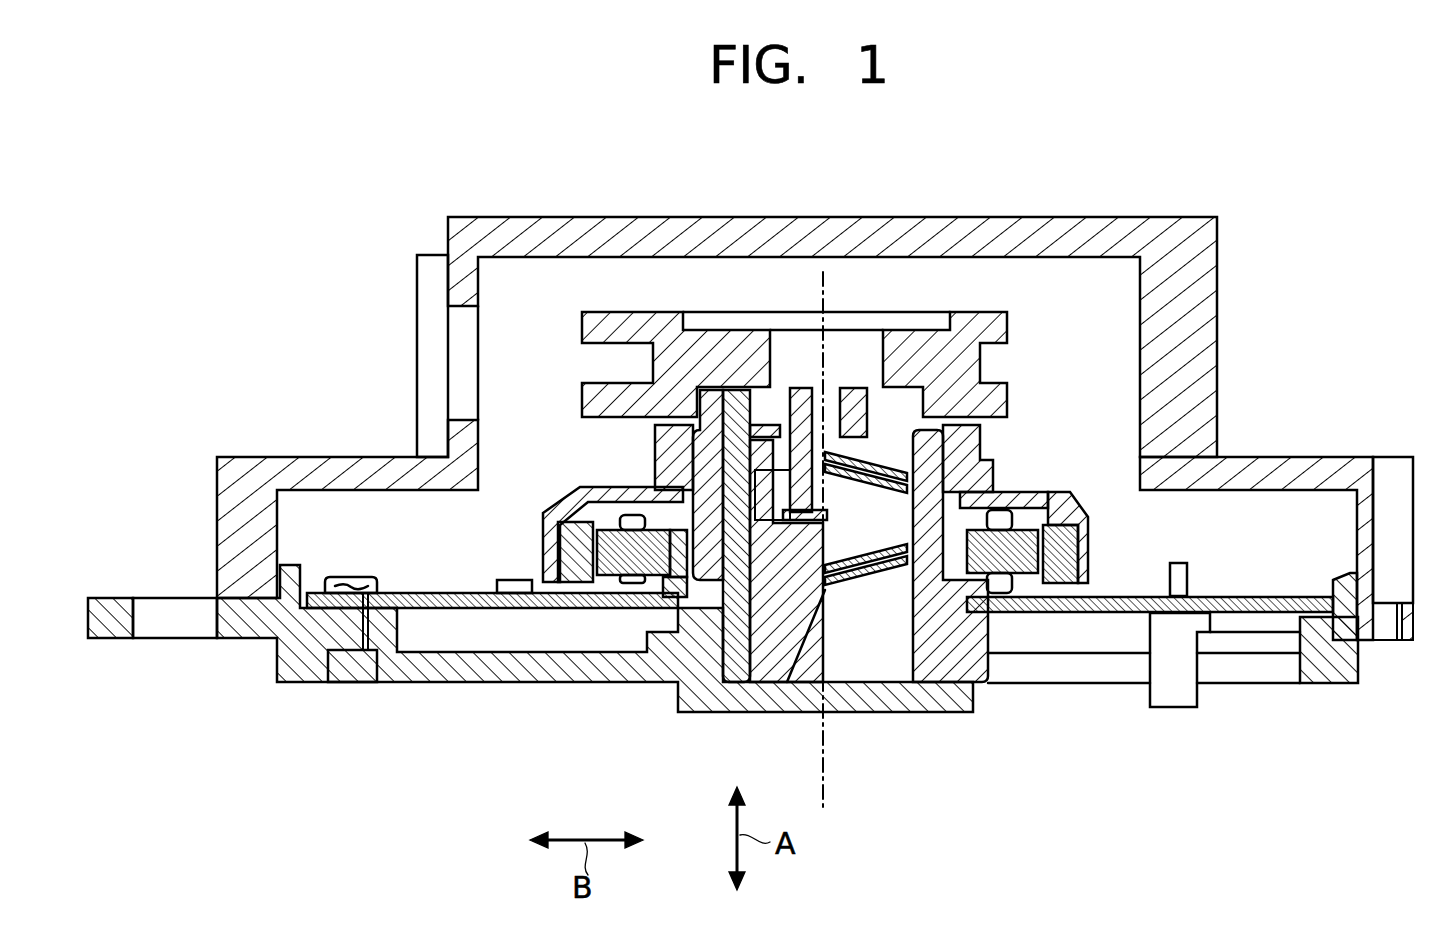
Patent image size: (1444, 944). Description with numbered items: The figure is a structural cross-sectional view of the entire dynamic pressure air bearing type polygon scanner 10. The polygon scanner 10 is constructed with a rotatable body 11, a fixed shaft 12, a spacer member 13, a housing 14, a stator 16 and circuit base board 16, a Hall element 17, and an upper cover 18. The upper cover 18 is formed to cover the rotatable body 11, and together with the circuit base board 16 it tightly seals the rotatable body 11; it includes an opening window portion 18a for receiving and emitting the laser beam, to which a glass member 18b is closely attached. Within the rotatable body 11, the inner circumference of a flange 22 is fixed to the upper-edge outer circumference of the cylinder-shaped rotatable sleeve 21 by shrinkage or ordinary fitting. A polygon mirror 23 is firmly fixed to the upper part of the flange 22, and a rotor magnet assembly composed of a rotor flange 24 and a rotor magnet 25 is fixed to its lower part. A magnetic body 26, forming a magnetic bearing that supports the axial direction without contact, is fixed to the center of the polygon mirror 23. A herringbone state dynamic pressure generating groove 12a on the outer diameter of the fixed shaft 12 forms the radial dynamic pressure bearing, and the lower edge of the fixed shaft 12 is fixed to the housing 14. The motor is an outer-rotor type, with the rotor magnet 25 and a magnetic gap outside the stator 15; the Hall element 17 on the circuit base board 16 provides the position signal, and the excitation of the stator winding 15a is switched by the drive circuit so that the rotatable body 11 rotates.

The dynamic pressure air bearing type polygon scanner 10 is at (1002, 178).
The rotatable body 11 is at (990, 292).
The fixed shaft 12 is at (912, 695).
The herringbone state dynamic pressure generating groove 12a is at (850, 488).
The spacer member 13 is at (793, 655).
The housing 14 is at (658, 670).
The stator 15 is at (1025, 570).
The stator winding 15a is at (637, 580).
The circuit base board 16 is at (432, 604).
The Hall element 17 is at (525, 587).
The upper cover 18 is at (568, 236).
The opening window portion 18a is at (458, 346).
The glass member 18b is at (428, 367).
The rotatable sleeve 21 is at (705, 518).
The flange 22 is at (980, 450).
The polygon mirror 23 is at (918, 352).
The rotor flange 24 is at (1068, 515).
The rotor magnet 25 is at (1062, 573).
The magnetic body 26 is at (802, 392).